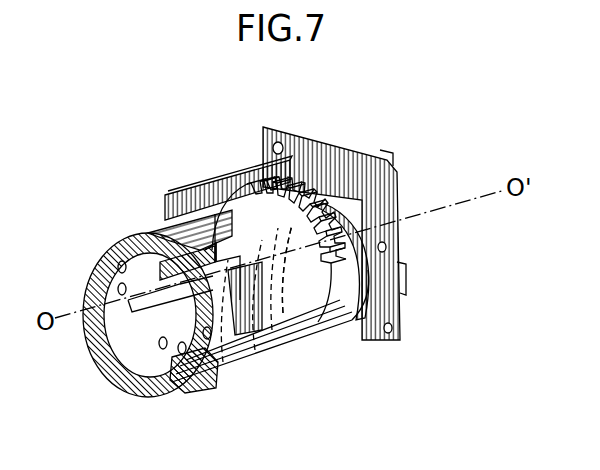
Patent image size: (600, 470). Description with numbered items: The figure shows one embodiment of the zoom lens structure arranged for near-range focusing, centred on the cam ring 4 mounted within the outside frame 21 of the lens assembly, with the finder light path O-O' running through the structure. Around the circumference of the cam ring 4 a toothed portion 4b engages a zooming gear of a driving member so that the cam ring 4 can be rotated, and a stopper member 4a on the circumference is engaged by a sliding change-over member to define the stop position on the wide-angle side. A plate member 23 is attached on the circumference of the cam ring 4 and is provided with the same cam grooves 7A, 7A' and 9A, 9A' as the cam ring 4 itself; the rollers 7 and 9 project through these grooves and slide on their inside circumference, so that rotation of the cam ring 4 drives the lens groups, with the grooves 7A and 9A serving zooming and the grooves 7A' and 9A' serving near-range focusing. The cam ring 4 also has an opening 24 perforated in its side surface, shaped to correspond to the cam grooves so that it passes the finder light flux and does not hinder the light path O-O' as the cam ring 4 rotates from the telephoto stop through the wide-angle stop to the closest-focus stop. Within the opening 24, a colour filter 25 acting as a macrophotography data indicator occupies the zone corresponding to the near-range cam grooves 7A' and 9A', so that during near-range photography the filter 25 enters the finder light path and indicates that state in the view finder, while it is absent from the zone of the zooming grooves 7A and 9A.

The cam ring 4 is at (316, 322).
The stopper member 4a is at (170, 236).
The toothed portion 4b is at (240, 172).
The roller 7 is at (223, 364).
The cam groove 7A is at (190, 393).
The cam groove 7A' is at (210, 252).
The roller 9 is at (255, 352).
The cam groove 9A is at (266, 316).
The cam groove 9A' is at (287, 269).
The outside frame 21 is at (312, 147).
The plate member 23 is at (208, 220).
The opening 24 is at (343, 297).
The colour filter 25 is at (337, 220).